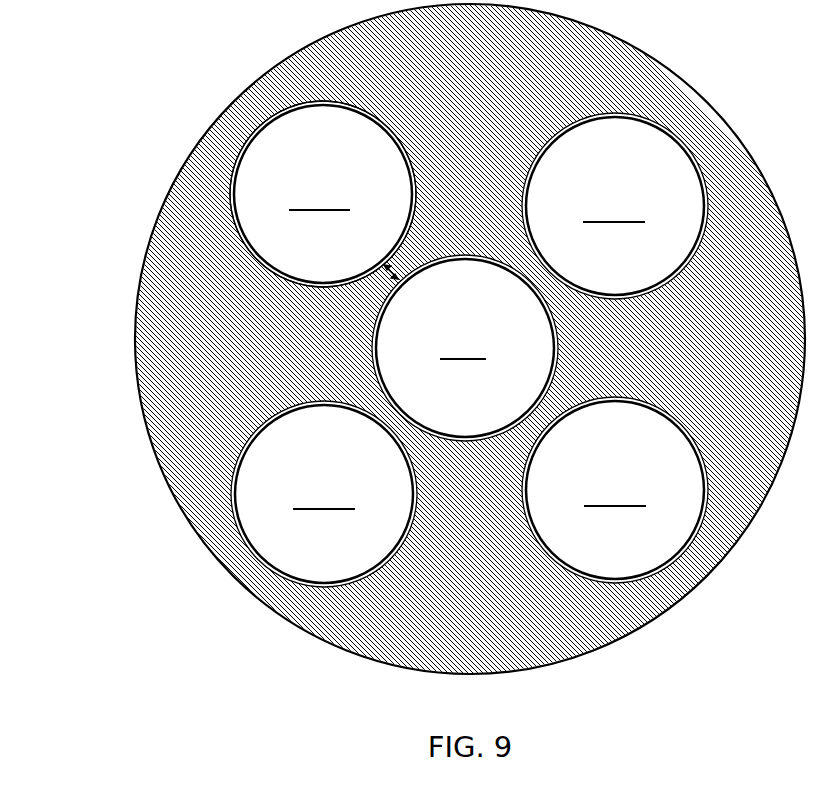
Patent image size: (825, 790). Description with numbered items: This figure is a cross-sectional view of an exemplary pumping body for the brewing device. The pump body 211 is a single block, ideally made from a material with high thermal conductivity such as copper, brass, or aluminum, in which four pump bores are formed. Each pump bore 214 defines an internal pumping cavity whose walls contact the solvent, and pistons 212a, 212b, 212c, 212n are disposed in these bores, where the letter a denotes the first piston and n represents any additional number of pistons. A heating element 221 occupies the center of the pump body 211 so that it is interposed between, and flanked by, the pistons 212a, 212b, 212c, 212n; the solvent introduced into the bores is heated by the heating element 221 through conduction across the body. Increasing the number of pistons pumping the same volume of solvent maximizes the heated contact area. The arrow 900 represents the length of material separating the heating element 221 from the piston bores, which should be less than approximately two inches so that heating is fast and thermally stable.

The pump body 211 is at (241, 118).
The first piston 212a is at (323, 194).
The piston 212b is at (615, 206).
The piston 212c is at (324, 494).
The piston 212n is at (615, 490).
The heating element 221 is at (465, 348).
The pump bore 214 is at (231, 200).
The length of material separating heating element and piston bores 900 is at (387, 274).